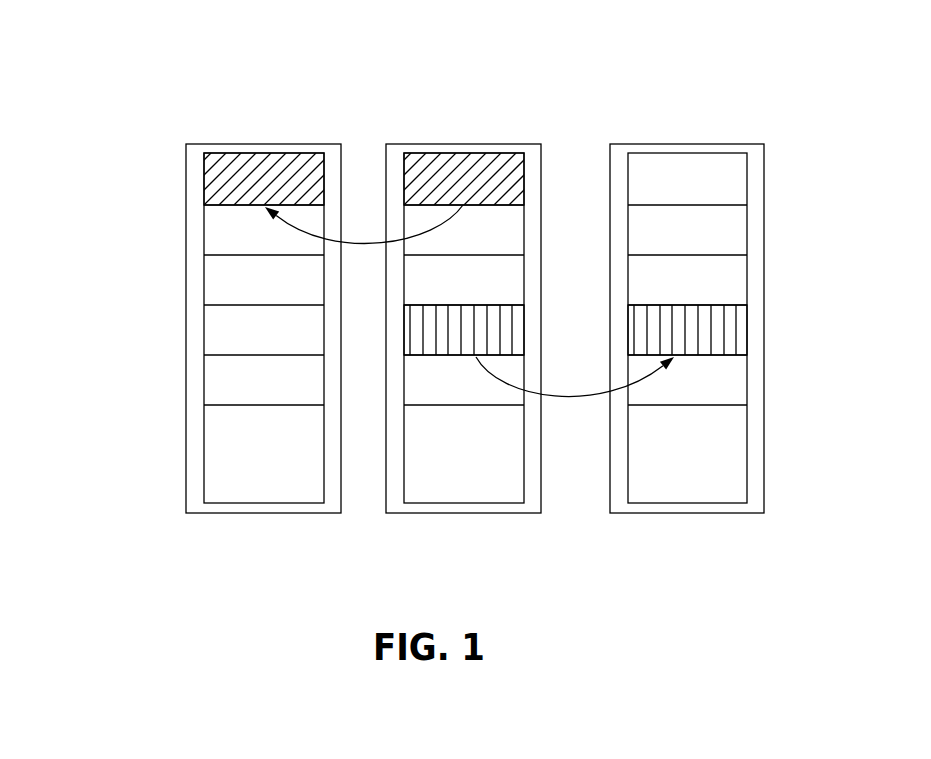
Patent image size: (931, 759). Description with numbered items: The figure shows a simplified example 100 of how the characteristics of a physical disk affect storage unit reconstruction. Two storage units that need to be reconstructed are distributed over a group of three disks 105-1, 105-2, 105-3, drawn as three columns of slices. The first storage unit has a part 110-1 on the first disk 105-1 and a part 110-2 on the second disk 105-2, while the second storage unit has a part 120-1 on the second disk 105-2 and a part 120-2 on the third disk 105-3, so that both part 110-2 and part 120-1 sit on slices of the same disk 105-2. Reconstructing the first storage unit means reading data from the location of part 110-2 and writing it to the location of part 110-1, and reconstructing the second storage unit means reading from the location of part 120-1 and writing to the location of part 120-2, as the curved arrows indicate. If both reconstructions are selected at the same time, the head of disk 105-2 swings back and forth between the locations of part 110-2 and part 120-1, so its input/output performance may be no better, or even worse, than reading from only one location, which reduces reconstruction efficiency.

The simplified example 100 is at (142, 41).
The disk 105-1 is at (260, 341).
The disk 105-2 is at (481, 341).
The disk 105-3 is at (702, 352).
The part of storage unit 110 110-1 is at (256, 165).
The part of storage unit 110 110-2 is at (472, 165).
The part of storage unit 120 120-1 is at (505, 333).
The part of storage unit 120 120-2 is at (728, 330).